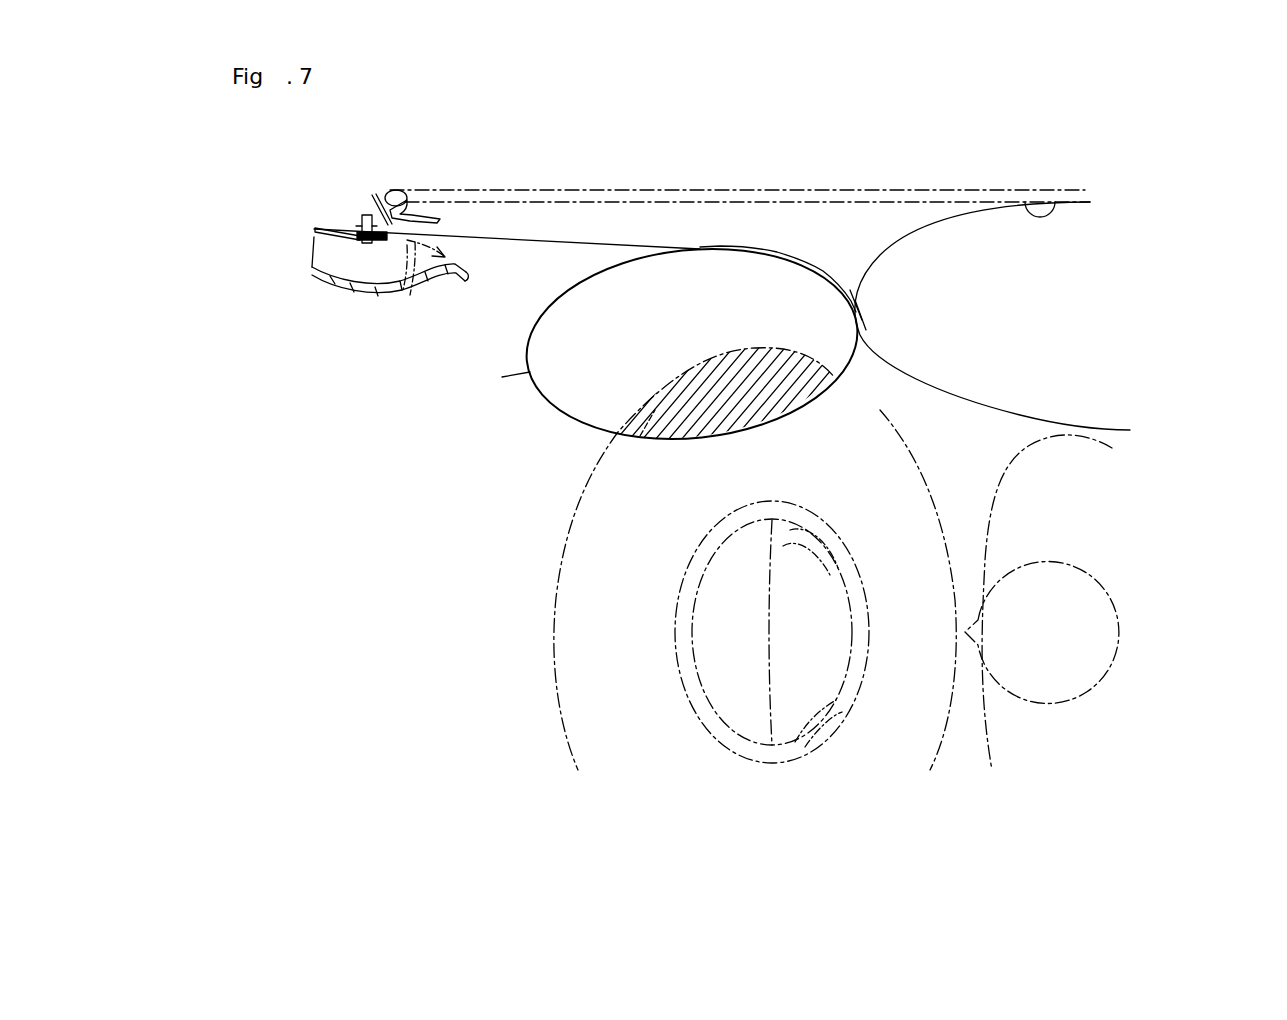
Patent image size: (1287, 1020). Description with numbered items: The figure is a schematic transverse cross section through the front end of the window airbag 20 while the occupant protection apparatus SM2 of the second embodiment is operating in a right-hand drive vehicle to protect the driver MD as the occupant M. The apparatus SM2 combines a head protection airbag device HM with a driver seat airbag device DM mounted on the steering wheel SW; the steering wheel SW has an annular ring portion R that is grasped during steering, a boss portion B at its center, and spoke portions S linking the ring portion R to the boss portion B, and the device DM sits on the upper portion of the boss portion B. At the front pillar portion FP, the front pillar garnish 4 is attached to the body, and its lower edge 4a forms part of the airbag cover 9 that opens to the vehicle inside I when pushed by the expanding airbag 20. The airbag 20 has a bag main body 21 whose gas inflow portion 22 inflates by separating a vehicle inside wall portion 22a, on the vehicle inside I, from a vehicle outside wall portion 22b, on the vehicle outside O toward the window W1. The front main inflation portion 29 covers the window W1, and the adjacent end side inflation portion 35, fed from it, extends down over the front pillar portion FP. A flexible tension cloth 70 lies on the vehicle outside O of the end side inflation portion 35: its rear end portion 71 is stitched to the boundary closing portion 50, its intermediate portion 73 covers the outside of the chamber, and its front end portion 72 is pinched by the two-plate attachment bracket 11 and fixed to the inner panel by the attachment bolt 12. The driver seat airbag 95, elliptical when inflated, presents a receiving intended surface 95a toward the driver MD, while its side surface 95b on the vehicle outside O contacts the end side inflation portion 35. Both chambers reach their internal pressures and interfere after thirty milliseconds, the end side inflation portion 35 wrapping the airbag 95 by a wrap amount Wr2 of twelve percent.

The front pillar garnish 4 is at (376, 290).
The lower edge 4a is at (429, 305).
The airbag cover 9 is at (453, 277).
The attachment bracket 11 is at (357, 243).
The attachment bolt 12 is at (365, 214).
The airbag 20 is at (457, 449).
The bag main body 21 is at (507, 405).
The gas inflow portion 22 is at (756, 317).
The vehicle inside wall portion 22a is at (1105, 425).
The vehicle outside wall portion 22b is at (1045, 210).
The front main inflation portion 29 is at (1063, 290).
The end side inflation portion 35 is at (746, 306).
The boundary closing portion 50 is at (868, 320).
The tension cloth 70 is at (580, 238).
The rear end portion 71 is at (850, 292).
The front end portion 72 is at (355, 232).
The intermediate portion 73 is at (713, 245).
The driver seat airbag 95 is at (590, 683).
The receiving intended surface 95a is at (935, 583).
The side surface 95b is at (720, 355).
The front pillar portion FP is at (363, 272).
The window W1 is at (795, 178).
The vehicle outside O is at (940, 148).
The vehicle inside I is at (960, 483).
The driver MD is at (1120, 557).
The occupant M is at (1108, 594).
The occupant protection apparatus SM2 is at (325, 500).
The head protection airbag device HM is at (430, 430).
The driver seat airbag device DM is at (483, 673).
The ring portion R is at (690, 592).
The steering wheel SW is at (690, 648).
The boss portion B is at (777, 637).
The spoke portions S is at (783, 546).
The wrap amount Wr2 is at (777, 430).